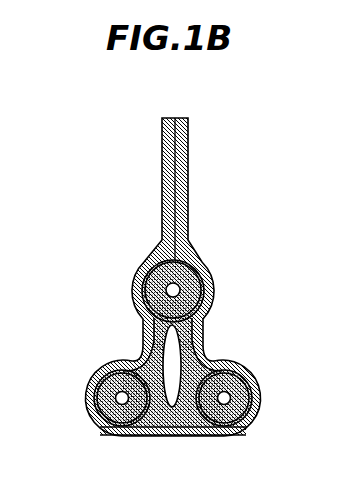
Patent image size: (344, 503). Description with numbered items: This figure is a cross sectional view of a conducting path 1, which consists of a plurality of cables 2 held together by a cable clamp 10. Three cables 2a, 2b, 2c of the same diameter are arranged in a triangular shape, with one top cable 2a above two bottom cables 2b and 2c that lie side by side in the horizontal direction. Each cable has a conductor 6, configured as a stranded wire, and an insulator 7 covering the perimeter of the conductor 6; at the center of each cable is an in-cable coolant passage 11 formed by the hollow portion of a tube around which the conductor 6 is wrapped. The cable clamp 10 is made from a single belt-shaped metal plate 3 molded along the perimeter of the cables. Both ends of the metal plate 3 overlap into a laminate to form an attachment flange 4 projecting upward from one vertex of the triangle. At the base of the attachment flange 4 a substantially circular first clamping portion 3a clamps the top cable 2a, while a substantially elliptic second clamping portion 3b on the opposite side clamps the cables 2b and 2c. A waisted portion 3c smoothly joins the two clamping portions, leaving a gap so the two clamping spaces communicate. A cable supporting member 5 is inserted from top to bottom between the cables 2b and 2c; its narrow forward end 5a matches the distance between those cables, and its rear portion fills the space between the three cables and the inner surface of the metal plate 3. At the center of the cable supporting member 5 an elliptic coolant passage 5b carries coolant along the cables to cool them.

The conducting path 1 is at (70, 111).
The cable clamp 10 is at (194, 114).
The cables 2 is at (146, 266).
The top cable 2a is at (133, 290).
The bottom cable 2b is at (122, 435).
The bottom cable 2c is at (222, 435).
The metal plate 3 is at (208, 257).
The first clamping portion 3a is at (215, 283).
The second clamping portion 3b is at (261, 398).
The waisted portion 3c is at (201, 329).
The attachment flange 4 is at (188, 158).
The cable supporting member 5 is at (240, 363).
The forward end 5a is at (170, 435).
The coolant passage 5b is at (142, 338).
The conductor 6 is at (87, 387).
The insulator 7 is at (92, 412).
The in-cable coolant passage 11 is at (254, 421).